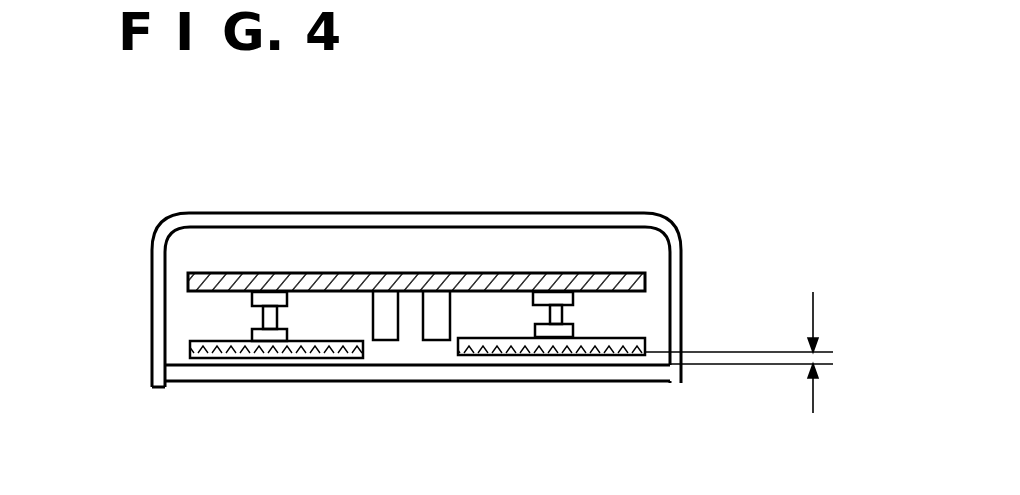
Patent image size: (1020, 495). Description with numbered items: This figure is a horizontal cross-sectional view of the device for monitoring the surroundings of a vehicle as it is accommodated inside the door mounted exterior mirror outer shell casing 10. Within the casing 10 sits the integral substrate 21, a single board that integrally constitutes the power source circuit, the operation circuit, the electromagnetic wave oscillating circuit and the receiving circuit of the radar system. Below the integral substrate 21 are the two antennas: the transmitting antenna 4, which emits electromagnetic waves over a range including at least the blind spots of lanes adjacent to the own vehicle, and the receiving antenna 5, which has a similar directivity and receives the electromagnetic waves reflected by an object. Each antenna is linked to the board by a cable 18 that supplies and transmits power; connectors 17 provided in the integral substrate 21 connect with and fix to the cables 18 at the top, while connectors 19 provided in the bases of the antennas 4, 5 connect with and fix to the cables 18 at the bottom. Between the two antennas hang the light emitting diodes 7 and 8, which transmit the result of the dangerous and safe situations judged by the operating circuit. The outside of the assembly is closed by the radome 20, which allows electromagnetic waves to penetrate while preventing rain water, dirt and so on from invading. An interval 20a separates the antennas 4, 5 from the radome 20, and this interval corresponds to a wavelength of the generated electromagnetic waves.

The door mounted exterior mirror outer shell casing 10 is at (217, 213).
The integral substrate 21 is at (207, 273).
The connectors 17 is at (252, 298).
The cables 18 is at (263, 318).
The connectors 19 is at (252, 336).
The receiving antenna 5 is at (270, 358).
The transmitting antenna 4 is at (540, 355).
The light emitting diode 8 is at (388, 340).
The light emitting diode 7 is at (435, 340).
The radome 20 is at (632, 381).
The interval 20a is at (763, 366).